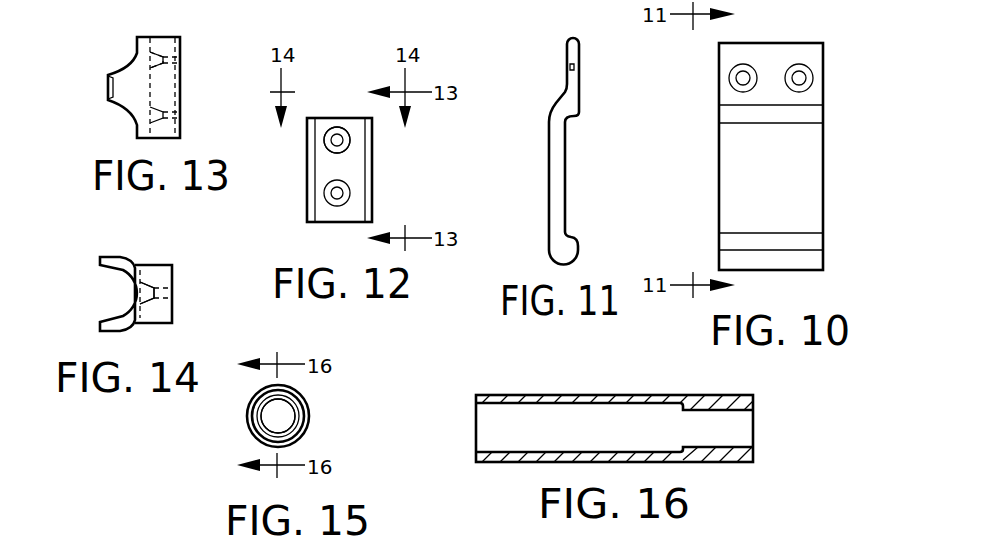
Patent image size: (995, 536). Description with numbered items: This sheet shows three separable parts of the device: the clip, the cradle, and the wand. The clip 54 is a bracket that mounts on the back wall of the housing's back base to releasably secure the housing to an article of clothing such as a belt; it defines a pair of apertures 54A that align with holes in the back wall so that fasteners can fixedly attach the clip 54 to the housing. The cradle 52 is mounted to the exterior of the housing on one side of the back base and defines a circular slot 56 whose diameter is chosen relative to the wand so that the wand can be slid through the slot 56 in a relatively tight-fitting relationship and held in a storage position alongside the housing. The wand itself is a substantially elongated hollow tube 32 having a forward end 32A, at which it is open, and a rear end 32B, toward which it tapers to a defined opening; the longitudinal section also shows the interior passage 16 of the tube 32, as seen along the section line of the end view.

In FIG. 15, the bore / lumen of tube 16 is at (287, 418).
In FIG. 16, the bore / lumen of tube 16 is at (552, 406).
In FIG. 15, the hollow tube 32 is at (306, 409).
In FIG. 16, the hollow tube 32 is at (600, 396).
In FIG. 16, the forward end 32A is at (476, 431).
In FIG. 16, the rear end 32B is at (754, 422).
In FIG. 13, the cradle 52 is at (181, 41).
In FIG. 14, the cradle 52 is at (152, 266).
In FIG. 12, the cradle 52 is at (373, 168).
In FIG. 11, the clip 54 is at (548, 148).
In FIG. 10, the clip 54 is at (834, 144).
In FIG. 11, the apertures 54A is at (577, 68).
In FIG. 10, the apertures 54A is at (795, 90).
In FIG. 13, the circular slot 56 is at (146, 79).
In FIG. 14, the circular slot 56 is at (121, 301).
In FIG. 12, the circular slot 56 is at (350, 116).